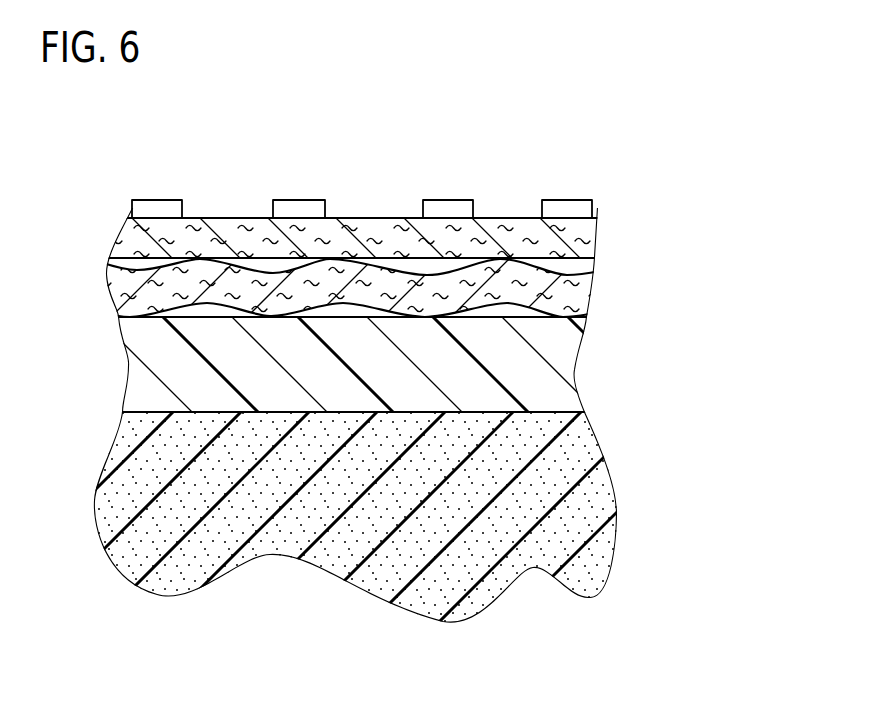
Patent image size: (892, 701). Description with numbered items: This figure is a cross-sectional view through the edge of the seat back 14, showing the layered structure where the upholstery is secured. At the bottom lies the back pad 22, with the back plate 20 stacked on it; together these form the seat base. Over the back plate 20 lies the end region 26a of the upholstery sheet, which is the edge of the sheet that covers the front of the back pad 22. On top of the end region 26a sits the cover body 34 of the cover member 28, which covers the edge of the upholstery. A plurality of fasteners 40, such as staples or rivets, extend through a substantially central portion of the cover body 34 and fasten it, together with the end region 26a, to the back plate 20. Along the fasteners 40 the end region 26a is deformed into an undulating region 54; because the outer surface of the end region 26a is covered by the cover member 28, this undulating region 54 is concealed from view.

The seat back 14 is at (540, 127).
The back plate 20 is at (568, 367).
The back pad 22 is at (603, 470).
The end region 26a is at (582, 303).
The cover member 28 is at (400, 238).
The cover body 34 is at (590, 245).
The fasteners 40 is at (150, 198).
The undulating region 54 is at (401, 257).